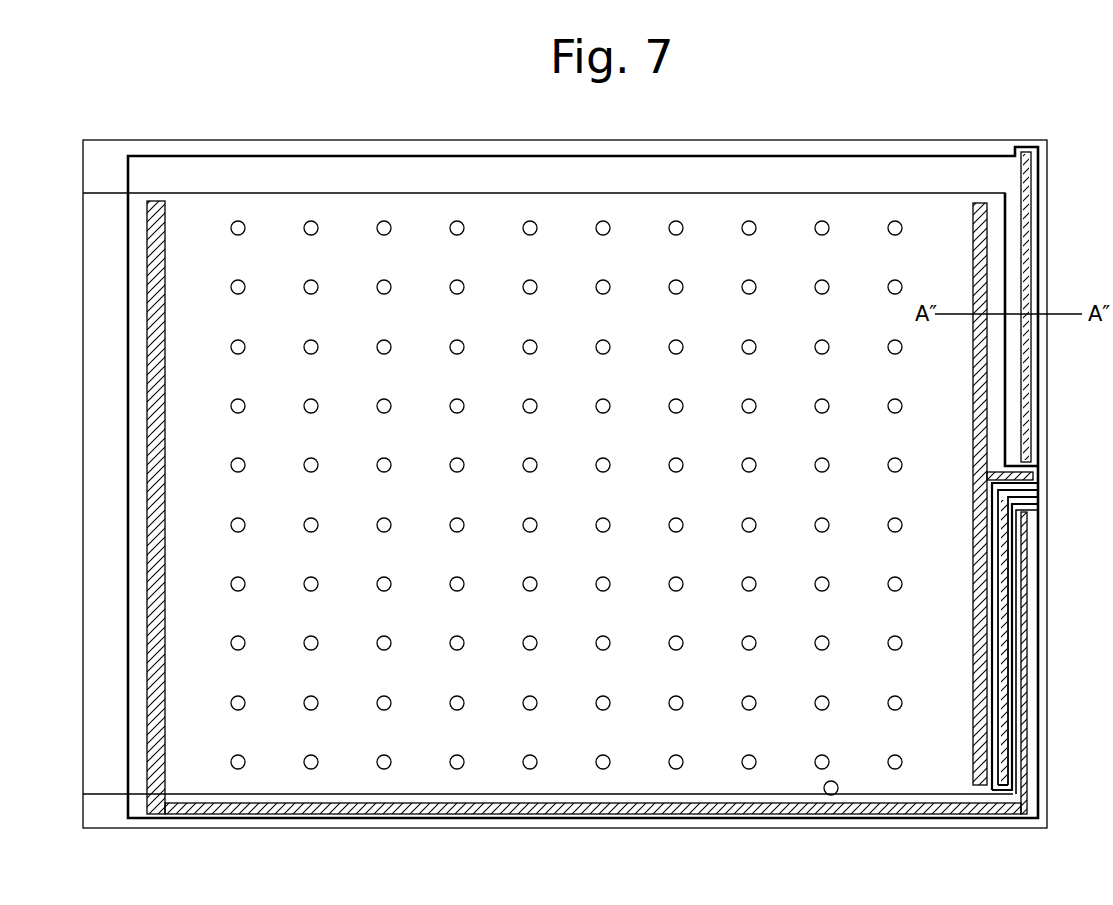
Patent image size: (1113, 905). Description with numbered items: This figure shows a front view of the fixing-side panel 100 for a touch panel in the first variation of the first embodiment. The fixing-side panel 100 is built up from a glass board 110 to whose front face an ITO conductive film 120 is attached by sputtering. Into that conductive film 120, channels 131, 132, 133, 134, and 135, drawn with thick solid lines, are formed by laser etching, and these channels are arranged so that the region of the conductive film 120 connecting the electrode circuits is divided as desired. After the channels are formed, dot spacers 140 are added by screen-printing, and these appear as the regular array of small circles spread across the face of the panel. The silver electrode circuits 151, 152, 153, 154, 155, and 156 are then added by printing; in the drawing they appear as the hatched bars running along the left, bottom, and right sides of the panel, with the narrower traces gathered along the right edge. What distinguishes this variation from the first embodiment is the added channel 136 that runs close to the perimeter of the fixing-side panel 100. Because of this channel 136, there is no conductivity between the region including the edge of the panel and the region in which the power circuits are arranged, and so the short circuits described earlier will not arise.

The fixing-side panel 100 is at (565, 462).
The glass board 110 is at (565, 462).
The ITO conductive film 120 is at (296, 178).
The channel 131 is at (836, 795).
The channel 132 is at (1013, 748).
The channel 133 is at (1000, 717).
The channel 134 is at (1008, 238).
The channel 135 is at (934, 191).
The channel 136 is at (757, 155).
The dot spacers 140 is at (601, 221).
The silver electrode circuit 151 is at (155, 705).
The silver electrode circuit 152 is at (322, 810).
The silver electrode circuit 153 is at (1025, 694).
The silver electrode circuit 154 is at (1005, 560).
The silver electrode circuit 155 is at (977, 355).
The silver electrode circuit 156 is at (1025, 398).